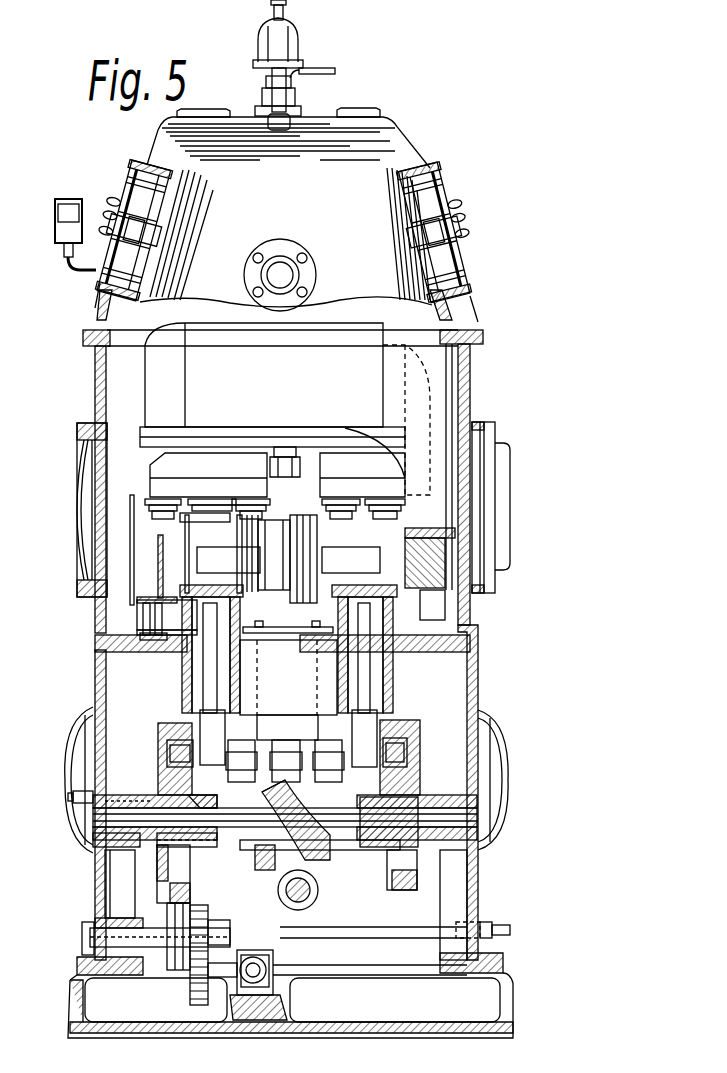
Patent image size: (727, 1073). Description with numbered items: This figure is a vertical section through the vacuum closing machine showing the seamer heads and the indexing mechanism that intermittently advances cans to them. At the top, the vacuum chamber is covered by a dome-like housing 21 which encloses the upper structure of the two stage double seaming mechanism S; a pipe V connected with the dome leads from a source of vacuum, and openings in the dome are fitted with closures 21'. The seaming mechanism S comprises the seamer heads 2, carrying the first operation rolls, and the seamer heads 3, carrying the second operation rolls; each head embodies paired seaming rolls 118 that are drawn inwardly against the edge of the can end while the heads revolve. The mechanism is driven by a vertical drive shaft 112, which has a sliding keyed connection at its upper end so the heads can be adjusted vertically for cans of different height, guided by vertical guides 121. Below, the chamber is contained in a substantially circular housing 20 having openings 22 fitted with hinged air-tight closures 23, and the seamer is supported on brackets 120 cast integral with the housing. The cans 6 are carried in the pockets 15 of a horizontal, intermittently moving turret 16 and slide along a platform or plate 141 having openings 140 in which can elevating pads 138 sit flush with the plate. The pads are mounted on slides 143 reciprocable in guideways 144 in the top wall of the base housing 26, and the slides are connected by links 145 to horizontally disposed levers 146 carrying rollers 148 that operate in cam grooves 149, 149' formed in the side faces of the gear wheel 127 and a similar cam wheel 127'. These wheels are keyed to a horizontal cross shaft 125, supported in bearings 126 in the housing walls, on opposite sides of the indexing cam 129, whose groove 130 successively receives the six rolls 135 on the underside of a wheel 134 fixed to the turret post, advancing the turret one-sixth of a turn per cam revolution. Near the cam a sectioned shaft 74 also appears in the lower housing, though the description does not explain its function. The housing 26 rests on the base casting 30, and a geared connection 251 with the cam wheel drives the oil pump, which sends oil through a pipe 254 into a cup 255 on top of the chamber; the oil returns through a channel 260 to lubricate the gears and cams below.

The cup 255 is at (296, 38).
The pipe 254 is at (300, 68).
The dome-like housing 21 is at (286, 215).
The closures 21' is at (276, 238).
The pipe V is at (300, 252).
The two stage double seaming mechanism S is at (285, 409).
The housing 20 is at (470, 380).
The vertical guides 121 is at (453, 394).
The openings 22 is at (485, 422).
The air-tight closures 23 is at (503, 443).
The brackets 120 is at (458, 535).
The drive shaft 112 is at (278, 450).
The seaming rolls 118 is at (150, 500).
The seamer heads 3 is at (208, 475).
The seamer heads 2 is at (362, 462).
The pockets 15 is at (158, 545).
The turret 16 is at (222, 552).
The cans 6 is at (380, 540).
The can elevating pads 138 is at (165, 600).
The openings 140 is at (160, 615).
The platform or plate 141 is at (288, 618).
The base housing 26 is at (95, 656).
The slides 143 is at (182, 660).
The guideways 144 is at (182, 686).
The links 145 is at (182, 705).
The wheel 134 is at (250, 740).
The rolls 135 is at (320, 740).
The levers 146 is at (160, 725).
The rollers 148 is at (165, 750).
The cam groove 149 is at (272, 799).
The cam groove 149' is at (471, 848).
The groove 130 is at (275, 845).
The indexing cam 129 is at (262, 870).
The cross shaft 125 is at (342, 840).
The shaft 74 is at (285, 898).
The bearings 126 is at (97, 850).
The gear wheel 127 is at (122, 881).
The cam wheel 127' is at (381, 883).
The base casting 30 is at (70, 985).
The geared connection 251 is at (190, 975).
The channel 260 is at (275, 990).